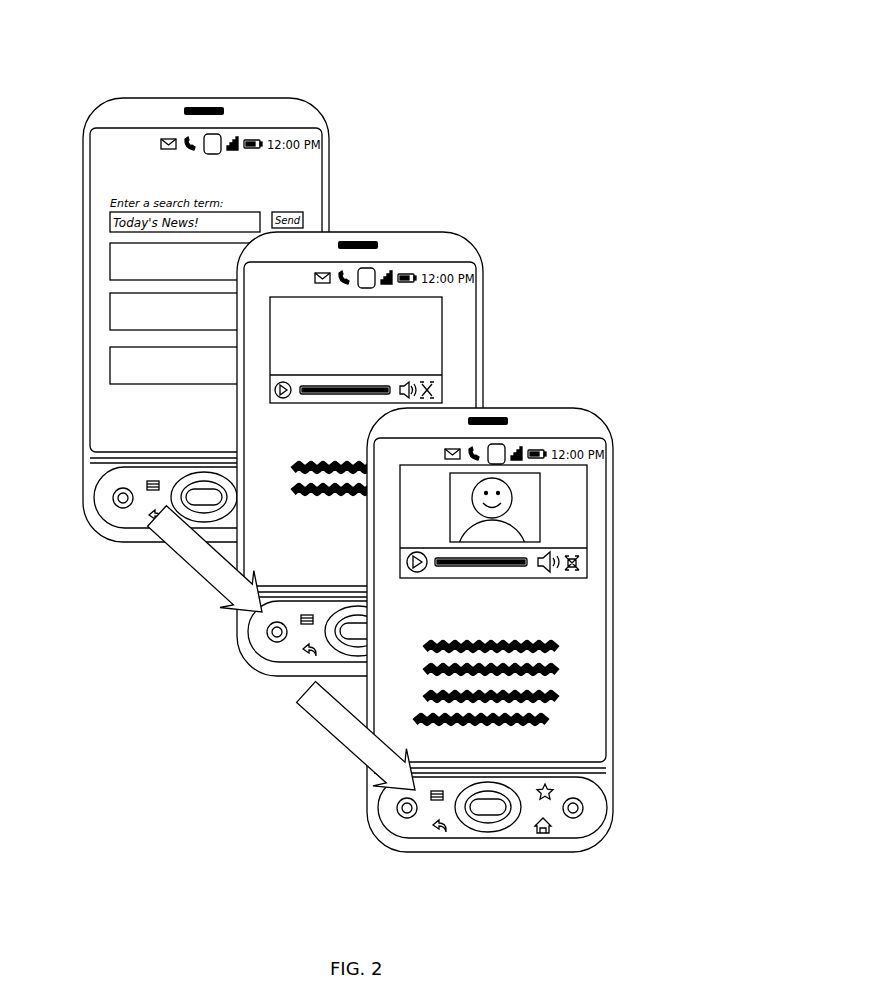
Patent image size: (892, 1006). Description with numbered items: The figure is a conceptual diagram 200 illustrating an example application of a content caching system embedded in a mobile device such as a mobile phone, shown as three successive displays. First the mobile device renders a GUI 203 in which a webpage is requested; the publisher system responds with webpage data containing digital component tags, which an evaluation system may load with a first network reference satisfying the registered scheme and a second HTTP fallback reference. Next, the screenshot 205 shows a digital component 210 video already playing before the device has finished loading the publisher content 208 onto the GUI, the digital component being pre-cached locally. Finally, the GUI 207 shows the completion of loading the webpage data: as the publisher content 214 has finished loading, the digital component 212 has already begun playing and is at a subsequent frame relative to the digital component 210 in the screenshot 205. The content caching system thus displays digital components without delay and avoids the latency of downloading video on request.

The conceptual diagram 200 is at (540, 68).
The GUI 203 is at (72, 138).
The screenshot 205 is at (267, 268).
The GUI 207 is at (612, 460).
The publisher content 208 is at (292, 487).
The digital component 210 is at (443, 335).
The digital component 212 is at (587, 518).
The publisher content 214 is at (557, 697).